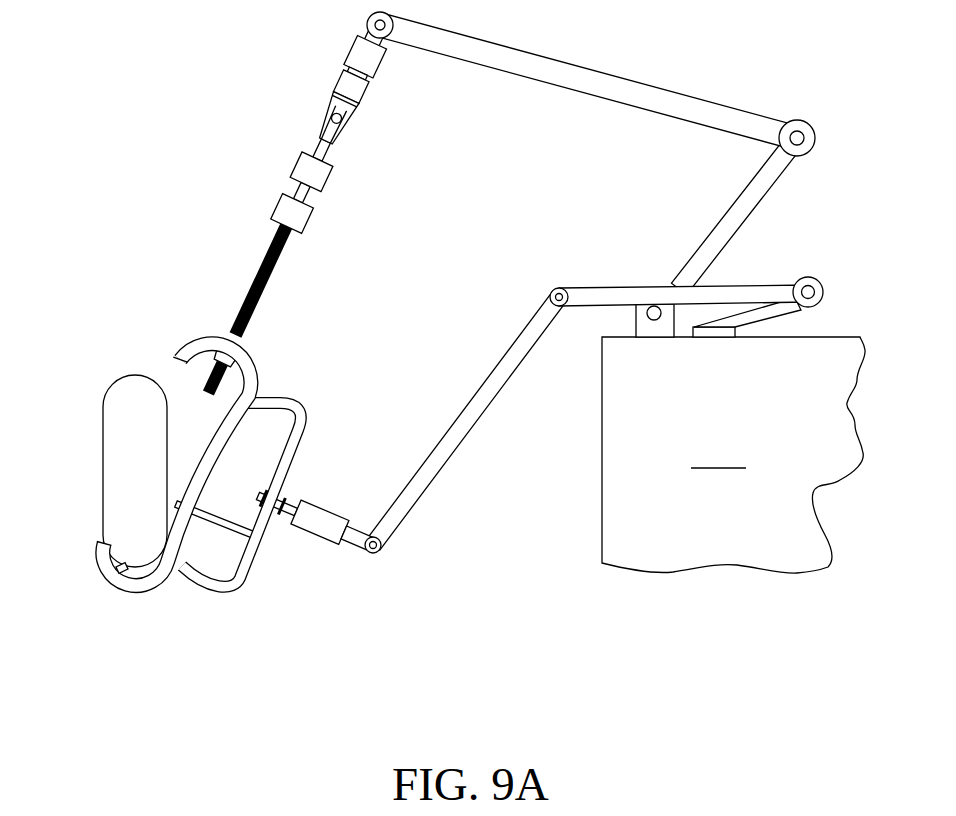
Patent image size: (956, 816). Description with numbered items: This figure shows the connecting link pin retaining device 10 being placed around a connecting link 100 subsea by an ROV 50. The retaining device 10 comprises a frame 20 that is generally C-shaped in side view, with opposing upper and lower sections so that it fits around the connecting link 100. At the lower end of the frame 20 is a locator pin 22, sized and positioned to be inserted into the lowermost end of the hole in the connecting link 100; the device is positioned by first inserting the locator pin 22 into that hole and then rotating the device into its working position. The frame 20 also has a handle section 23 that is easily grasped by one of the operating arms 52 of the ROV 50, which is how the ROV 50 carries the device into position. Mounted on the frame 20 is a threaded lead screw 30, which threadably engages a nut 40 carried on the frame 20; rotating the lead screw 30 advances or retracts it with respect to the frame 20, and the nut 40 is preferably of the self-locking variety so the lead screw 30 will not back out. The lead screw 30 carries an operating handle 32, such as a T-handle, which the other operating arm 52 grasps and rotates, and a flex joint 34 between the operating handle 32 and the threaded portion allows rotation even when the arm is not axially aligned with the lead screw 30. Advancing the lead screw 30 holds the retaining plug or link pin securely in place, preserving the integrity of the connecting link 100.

The retaining device 10 is at (171, 508).
The frame 20 is at (157, 583).
The locator pin 22 is at (120, 568).
The handle section 23 is at (238, 576).
The lead screw 30 is at (290, 271).
The operating handle 32 is at (340, 121).
The flex joint 34 is at (303, 193).
The nut 40 is at (244, 358).
The ROV 50 is at (748, 548).
The operating arms 52 is at (360, 54).
The connecting link 100 is at (123, 470).